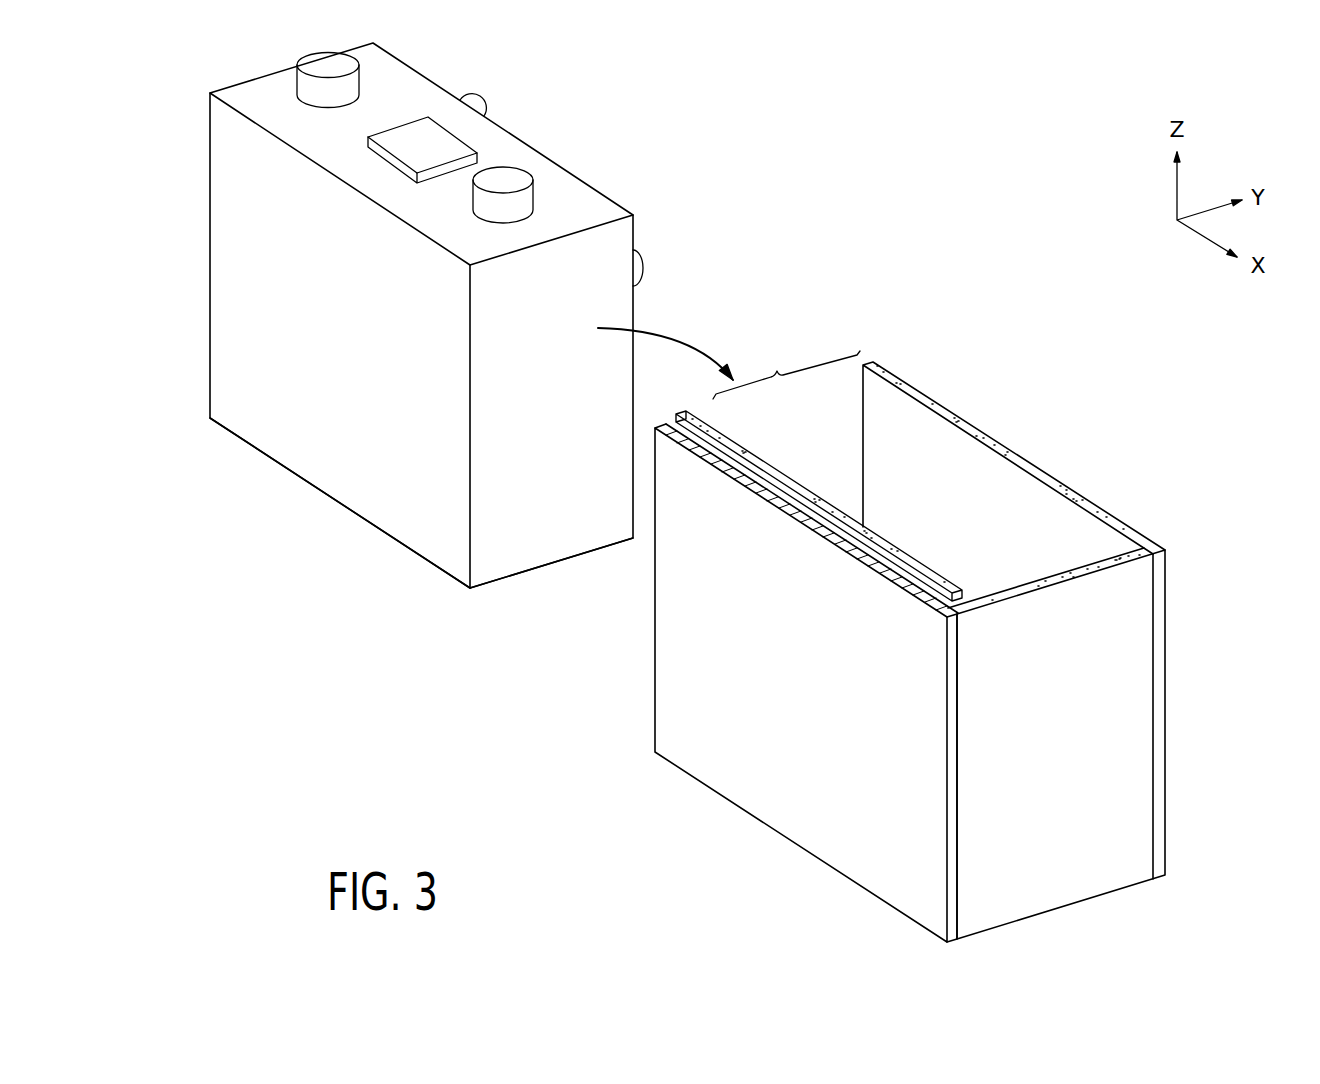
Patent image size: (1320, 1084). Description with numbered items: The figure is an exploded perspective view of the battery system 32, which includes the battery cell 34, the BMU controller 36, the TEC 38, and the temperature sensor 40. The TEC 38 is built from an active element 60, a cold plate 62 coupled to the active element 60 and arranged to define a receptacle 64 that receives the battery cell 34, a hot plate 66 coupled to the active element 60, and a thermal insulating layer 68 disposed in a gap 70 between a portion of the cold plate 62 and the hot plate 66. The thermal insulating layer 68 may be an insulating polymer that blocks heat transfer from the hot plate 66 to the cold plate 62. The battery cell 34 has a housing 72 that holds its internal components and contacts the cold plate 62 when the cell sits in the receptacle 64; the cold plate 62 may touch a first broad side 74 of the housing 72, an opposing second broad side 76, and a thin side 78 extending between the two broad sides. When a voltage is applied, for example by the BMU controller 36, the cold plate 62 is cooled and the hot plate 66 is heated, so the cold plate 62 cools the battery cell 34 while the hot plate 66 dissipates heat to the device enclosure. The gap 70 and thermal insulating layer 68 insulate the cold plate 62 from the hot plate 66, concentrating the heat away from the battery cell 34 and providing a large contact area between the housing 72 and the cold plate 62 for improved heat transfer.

The battery system 32 is at (847, 315).
The battery cell 34 is at (588, 163).
The BMU controller 36 is at (450, 145).
The TEC 38 is at (1095, 485).
The temperature sensor 40 is at (478, 97).
The active element 60 is at (1060, 895).
The cold plate 62 is at (1142, 534).
The receptacle 64 is at (786, 370).
The hot plate 66 is at (667, 663).
The thermal insulating layer 68 is at (712, 430).
The gap 70 is at (672, 410).
The housing 72 is at (483, 572).
The first broad side 74 is at (225, 260).
The second broad side 76 is at (633, 280).
The thin side 78 is at (482, 380).